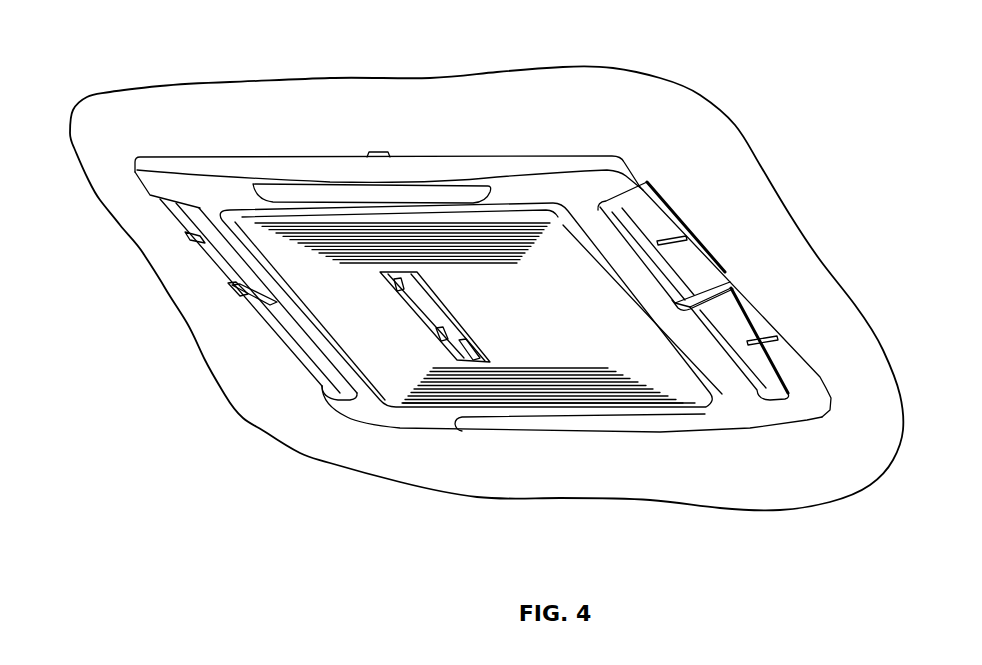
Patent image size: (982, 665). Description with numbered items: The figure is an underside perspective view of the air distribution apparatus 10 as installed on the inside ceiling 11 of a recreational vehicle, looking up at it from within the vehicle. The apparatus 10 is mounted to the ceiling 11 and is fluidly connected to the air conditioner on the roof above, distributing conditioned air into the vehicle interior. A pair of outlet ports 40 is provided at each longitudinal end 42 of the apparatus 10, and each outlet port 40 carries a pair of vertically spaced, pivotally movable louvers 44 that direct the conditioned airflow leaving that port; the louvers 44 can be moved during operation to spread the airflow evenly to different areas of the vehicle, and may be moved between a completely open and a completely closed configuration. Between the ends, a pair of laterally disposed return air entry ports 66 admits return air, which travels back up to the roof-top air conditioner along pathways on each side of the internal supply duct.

The air distribution apparatus 10 is at (423, 160).
The inside ceiling 11 is at (650, 100).
The outlet port 40 is at (188, 253).
The longitudinal end 42 is at (230, 288).
The louvers 44 is at (227, 268).
The return air entry ports 66 is at (510, 243).